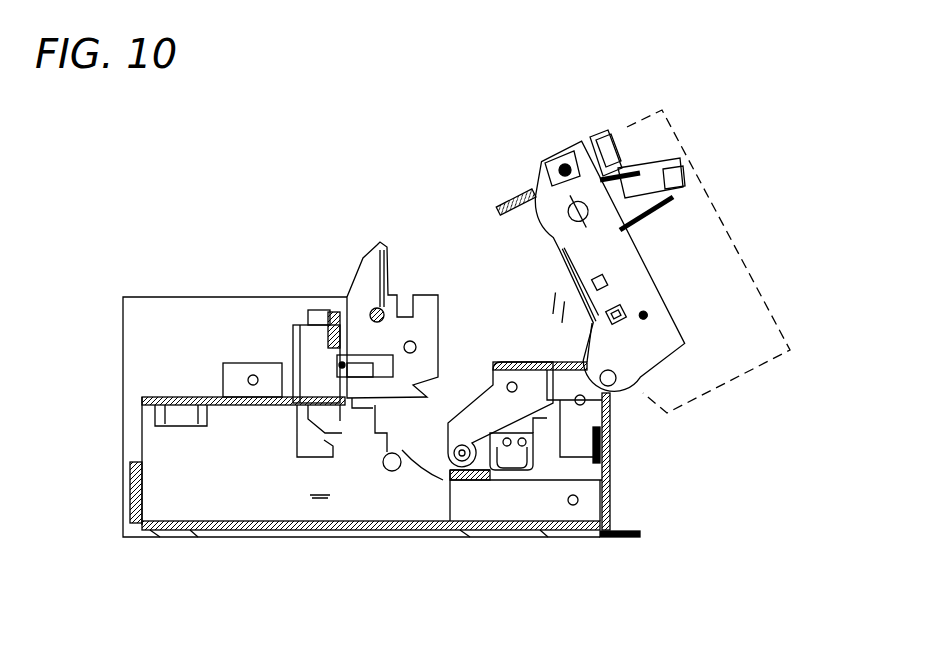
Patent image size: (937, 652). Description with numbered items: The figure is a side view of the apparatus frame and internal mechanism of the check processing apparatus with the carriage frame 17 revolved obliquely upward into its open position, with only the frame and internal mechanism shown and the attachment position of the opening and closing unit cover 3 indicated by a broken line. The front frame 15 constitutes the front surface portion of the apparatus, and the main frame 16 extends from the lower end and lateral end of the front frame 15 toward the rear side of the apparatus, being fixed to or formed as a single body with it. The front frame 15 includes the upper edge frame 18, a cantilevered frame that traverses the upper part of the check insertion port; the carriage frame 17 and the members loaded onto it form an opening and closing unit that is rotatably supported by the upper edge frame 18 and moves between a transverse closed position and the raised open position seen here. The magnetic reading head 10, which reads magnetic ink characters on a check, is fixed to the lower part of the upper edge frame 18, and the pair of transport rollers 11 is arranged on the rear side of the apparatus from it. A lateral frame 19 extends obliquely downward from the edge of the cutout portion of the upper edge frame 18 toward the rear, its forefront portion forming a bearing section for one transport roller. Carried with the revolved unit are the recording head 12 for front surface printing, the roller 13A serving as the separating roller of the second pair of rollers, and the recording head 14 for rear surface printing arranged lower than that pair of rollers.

The opening and closing unit cover 3 is at (708, 190).
The magnetic reading head 10 is at (536, 460).
The pair of transport rollers 11 is at (443, 467).
The recording head 12 is at (633, 160).
The roller 13A is at (561, 167).
The recording head 14 is at (320, 307).
The front frame 15 is at (613, 440).
The main frame 16 is at (228, 495).
The carriage frame 17 is at (652, 260).
The upper edge frame 18 is at (541, 357).
The lateral frame 19 is at (481, 397).